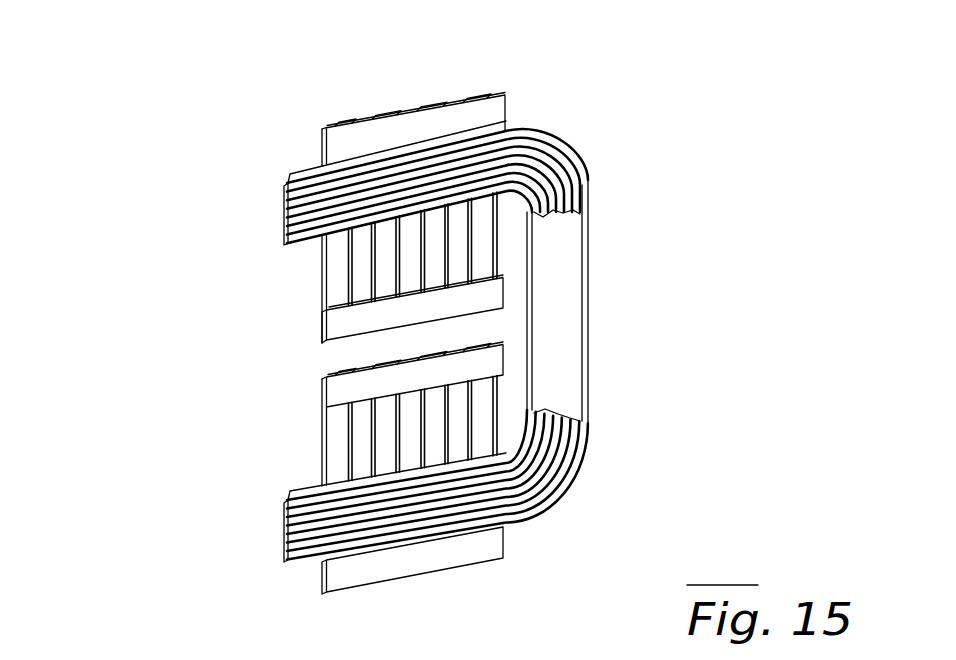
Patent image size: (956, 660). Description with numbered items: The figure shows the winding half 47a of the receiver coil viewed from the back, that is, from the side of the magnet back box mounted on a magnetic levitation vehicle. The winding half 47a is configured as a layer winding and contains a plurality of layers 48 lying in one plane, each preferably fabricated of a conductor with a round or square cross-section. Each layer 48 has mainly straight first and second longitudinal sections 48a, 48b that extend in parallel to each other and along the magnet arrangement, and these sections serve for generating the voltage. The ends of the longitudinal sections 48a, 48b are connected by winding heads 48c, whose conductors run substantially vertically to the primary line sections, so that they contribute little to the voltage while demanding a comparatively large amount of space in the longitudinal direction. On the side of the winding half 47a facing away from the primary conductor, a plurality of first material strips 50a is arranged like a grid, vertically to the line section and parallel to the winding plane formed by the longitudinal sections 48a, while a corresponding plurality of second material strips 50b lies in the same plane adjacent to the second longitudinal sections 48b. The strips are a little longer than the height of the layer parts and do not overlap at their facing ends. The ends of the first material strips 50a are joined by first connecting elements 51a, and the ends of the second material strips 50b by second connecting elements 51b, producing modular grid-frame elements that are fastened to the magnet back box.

The winding half 47a is at (205, 188).
The layer 48 is at (509, 193).
The first longitudinal section 48a is at (288, 243).
The second longitudinal section 48b is at (285, 548).
The winding head 48c is at (580, 323).
The first material strip 50a is at (337, 273).
The second material strip 50b is at (340, 459).
The first connecting element 51a is at (357, 140).
The second connecting element 51b is at (350, 392).